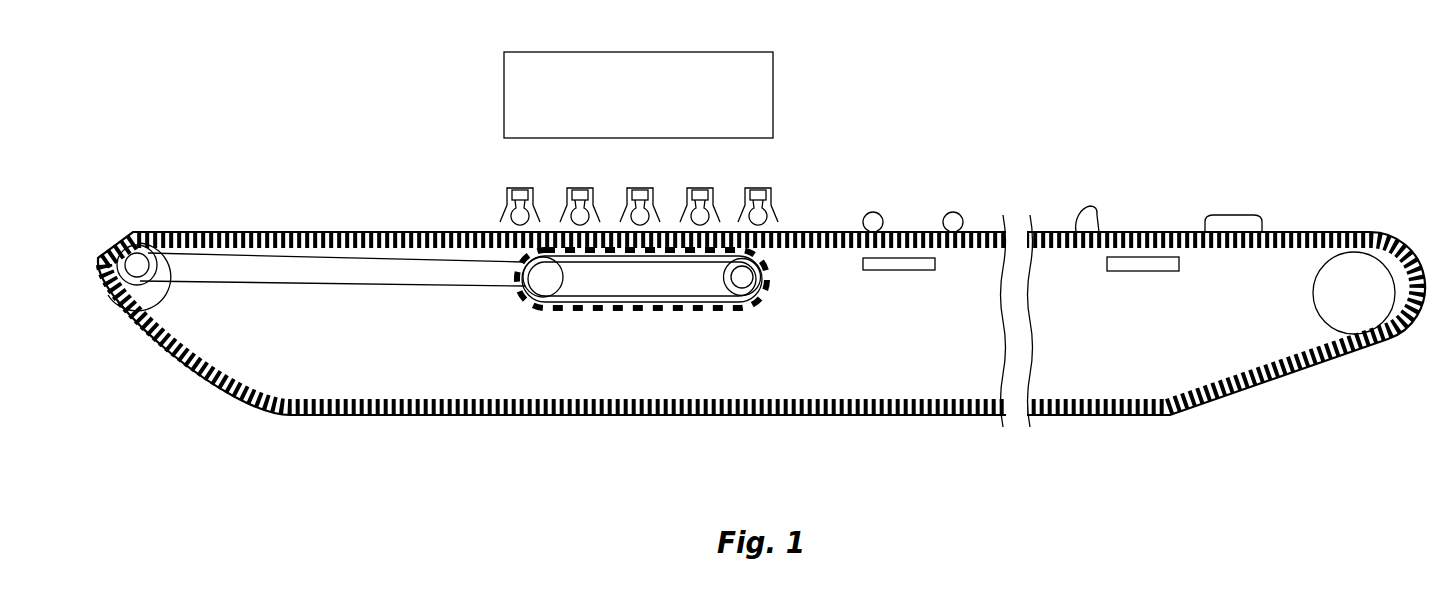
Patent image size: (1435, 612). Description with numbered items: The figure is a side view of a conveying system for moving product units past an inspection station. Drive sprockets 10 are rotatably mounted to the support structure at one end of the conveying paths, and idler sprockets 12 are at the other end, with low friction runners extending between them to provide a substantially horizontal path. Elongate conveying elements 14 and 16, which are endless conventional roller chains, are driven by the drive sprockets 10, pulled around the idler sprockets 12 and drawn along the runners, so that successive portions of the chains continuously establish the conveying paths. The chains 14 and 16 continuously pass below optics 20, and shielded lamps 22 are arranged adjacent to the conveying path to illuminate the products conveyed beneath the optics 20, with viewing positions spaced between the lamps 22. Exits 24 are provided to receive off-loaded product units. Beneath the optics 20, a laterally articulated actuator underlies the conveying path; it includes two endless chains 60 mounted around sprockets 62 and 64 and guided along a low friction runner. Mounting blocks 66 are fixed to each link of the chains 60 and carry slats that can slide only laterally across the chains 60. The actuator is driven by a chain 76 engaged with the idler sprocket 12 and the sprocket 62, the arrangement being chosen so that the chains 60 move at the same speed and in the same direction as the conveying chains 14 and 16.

The drive sprockets 10 is at (1320, 260).
The idler sprockets 12 is at (175, 232).
The elongate conveying element 14 is at (848, 232).
The elongate conveying element 16 is at (760, 323).
The optics 20 is at (773, 72).
The shielded lamps 22 is at (772, 188).
The exits 24 is at (912, 273).
The endless chains 60 is at (654, 308).
The sprocket 62 is at (747, 278).
The sprocket 64 is at (543, 280).
The mounting blocks 66 is at (605, 310).
The chain 76 is at (373, 281).